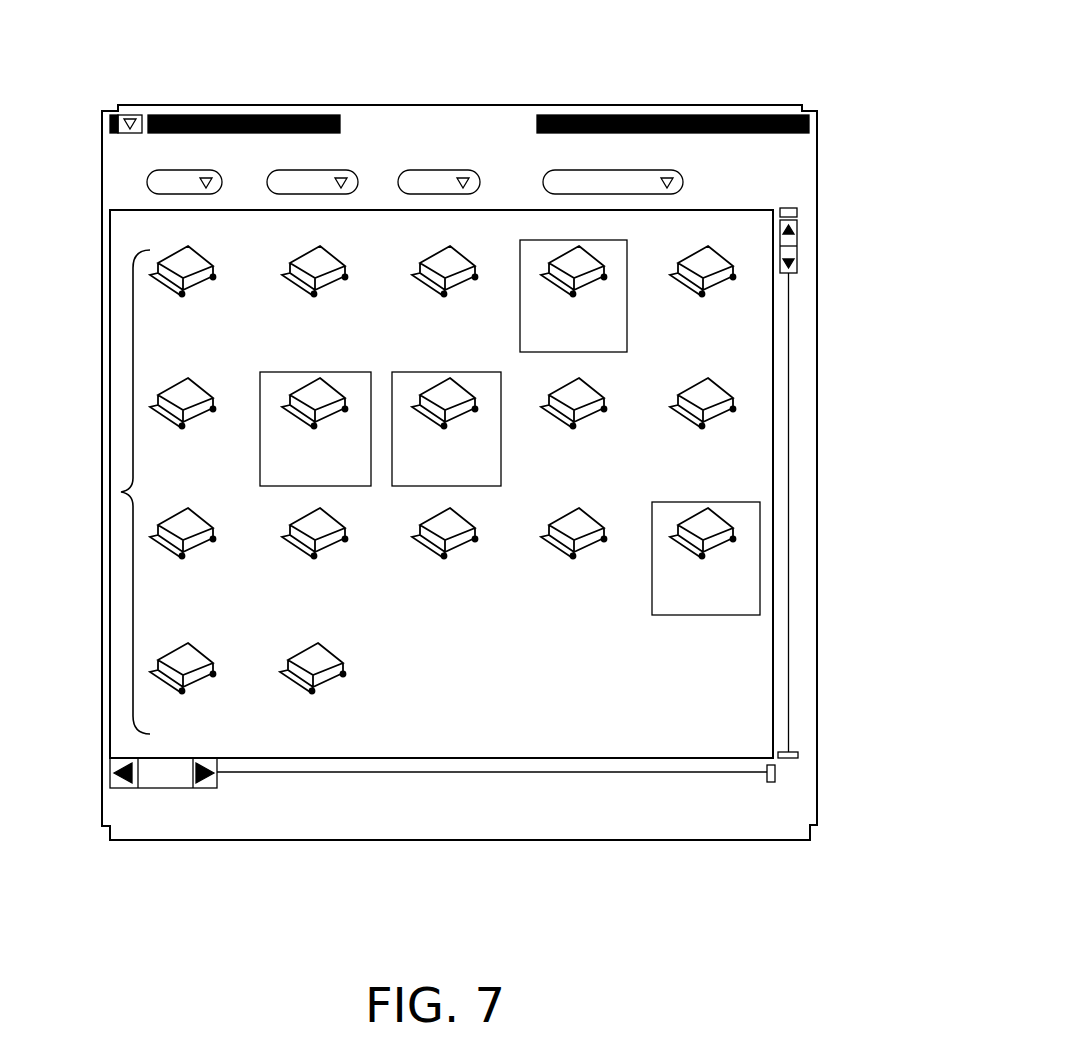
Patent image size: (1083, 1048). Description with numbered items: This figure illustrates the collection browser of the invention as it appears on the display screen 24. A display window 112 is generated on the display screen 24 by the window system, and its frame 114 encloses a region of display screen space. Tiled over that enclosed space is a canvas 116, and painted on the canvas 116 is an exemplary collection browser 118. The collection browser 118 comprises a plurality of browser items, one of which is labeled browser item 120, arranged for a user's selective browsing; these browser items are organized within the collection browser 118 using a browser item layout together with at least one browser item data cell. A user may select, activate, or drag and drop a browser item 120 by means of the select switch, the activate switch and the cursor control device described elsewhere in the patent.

The display screen 24 is at (464, 926).
The display window 112 is at (722, 99).
The frame 114 is at (825, 163).
The canvas 116 is at (709, 726).
The collection browser 118 is at (121, 492).
The browser item 120 is at (345, 658).